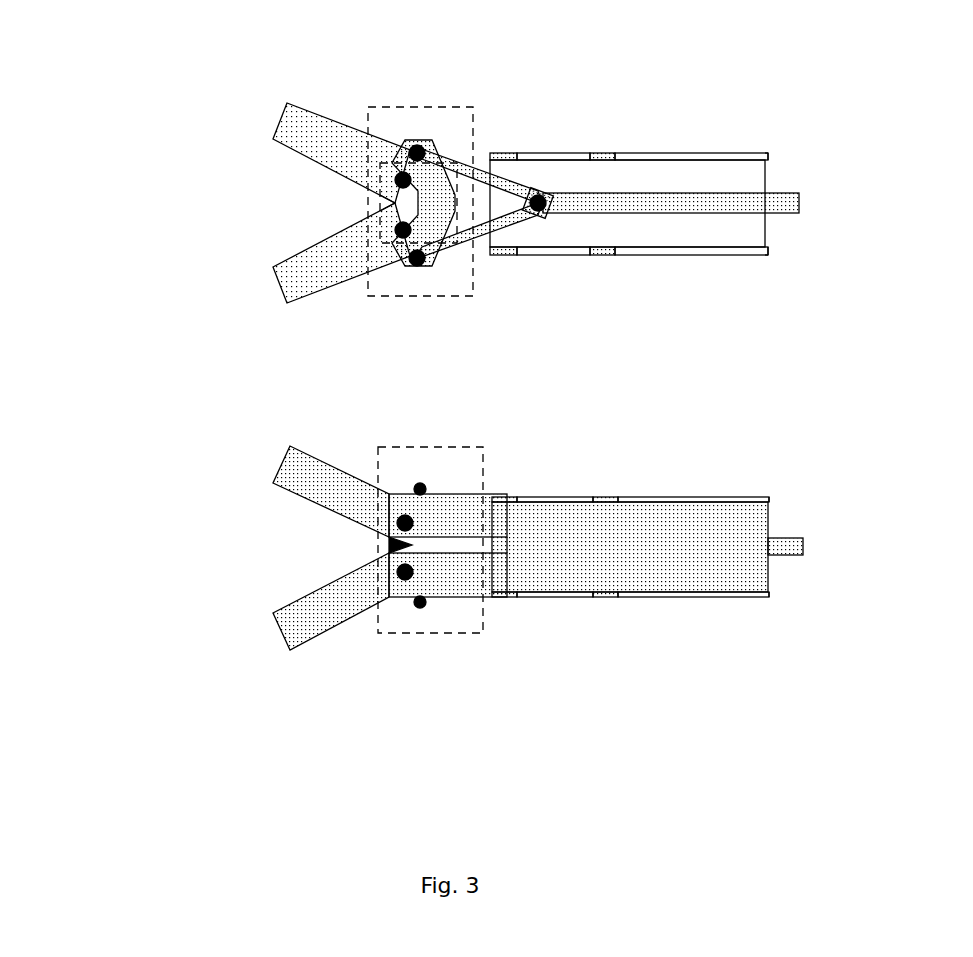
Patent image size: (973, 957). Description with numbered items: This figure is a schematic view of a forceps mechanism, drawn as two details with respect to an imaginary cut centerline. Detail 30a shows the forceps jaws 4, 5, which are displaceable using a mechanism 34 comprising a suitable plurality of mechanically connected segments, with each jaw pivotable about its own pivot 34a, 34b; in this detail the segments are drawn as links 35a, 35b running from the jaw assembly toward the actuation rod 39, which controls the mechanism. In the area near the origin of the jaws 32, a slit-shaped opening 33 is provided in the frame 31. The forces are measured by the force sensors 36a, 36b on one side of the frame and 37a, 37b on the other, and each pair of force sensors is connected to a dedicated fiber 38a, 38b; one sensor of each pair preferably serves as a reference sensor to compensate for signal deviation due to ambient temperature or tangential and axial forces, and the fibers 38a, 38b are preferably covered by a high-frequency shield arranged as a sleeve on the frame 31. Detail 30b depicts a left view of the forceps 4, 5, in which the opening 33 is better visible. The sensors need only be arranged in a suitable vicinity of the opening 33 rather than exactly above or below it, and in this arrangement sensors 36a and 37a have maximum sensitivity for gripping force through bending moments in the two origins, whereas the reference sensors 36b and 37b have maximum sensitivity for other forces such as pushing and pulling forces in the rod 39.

The detail showing forceps jaws with mechanism 30a is at (344, 163).
The detail showing left view of forceps 30b is at (242, 511).
The forceps jaw 4 is at (321, 117).
The forceps jaw 5 is at (320, 283).
The frame 31 is at (683, 178).
The origin of the jaws 32 is at (380, 187).
The slit-shaped opening 33 is at (464, 197).
The mechanism 34 is at (405, 102).
The pivot 34a is at (401, 158).
The pivot 34b is at (403, 260).
The first link 35a is at (483, 173).
The second link 35b is at (487, 227).
The force sensor 36a is at (508, 152).
The force sensor 36b is at (603, 155).
The force sensor 37a is at (508, 252).
The force sensor 37b is at (613, 253).
The fiber 38a is at (768, 156).
The fiber 38b is at (768, 252).
The actuation rod 39 is at (790, 201).